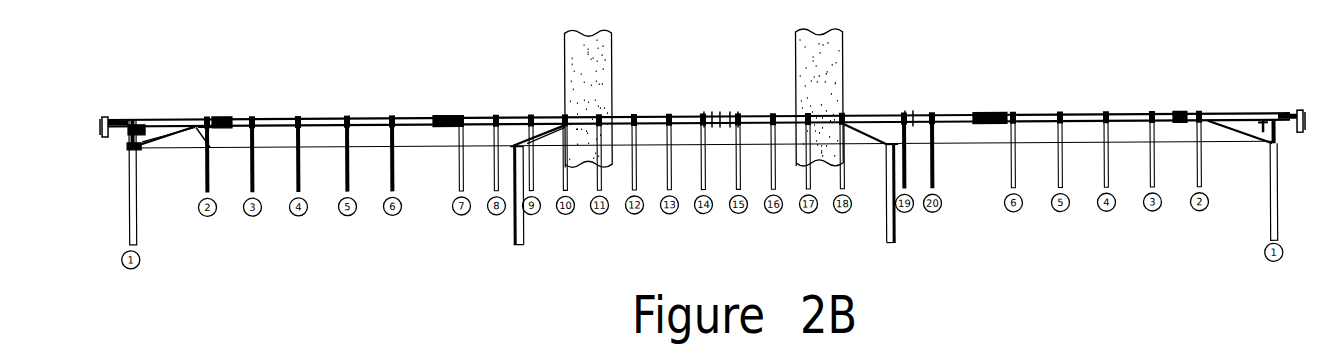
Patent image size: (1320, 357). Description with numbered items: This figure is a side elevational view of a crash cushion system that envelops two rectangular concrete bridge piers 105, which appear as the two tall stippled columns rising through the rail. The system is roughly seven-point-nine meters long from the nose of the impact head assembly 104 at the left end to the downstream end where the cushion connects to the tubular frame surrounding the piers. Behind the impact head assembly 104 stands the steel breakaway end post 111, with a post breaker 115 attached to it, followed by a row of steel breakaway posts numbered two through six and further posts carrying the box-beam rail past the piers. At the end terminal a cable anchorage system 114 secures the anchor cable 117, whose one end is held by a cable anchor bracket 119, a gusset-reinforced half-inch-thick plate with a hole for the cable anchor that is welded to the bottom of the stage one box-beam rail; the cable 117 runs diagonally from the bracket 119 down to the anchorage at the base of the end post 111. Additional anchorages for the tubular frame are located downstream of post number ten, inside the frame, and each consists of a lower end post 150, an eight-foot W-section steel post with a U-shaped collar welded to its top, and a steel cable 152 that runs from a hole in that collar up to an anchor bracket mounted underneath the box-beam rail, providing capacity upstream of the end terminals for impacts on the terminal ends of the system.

The impact head assembly 104 is at (103, 120).
The rectangular concrete bridge pier 105 is at (703, 98).
The steel breakaway end post 111 is at (130, 193).
The cable anchorage system 114 is at (153, 184).
The post breaker 115 is at (125, 107).
The anchor cable 117 is at (180, 184).
The cable anchor bracket 119 is at (222, 146).
The lower end post 150 is at (513, 231).
The steel cable 152 is at (548, 182).